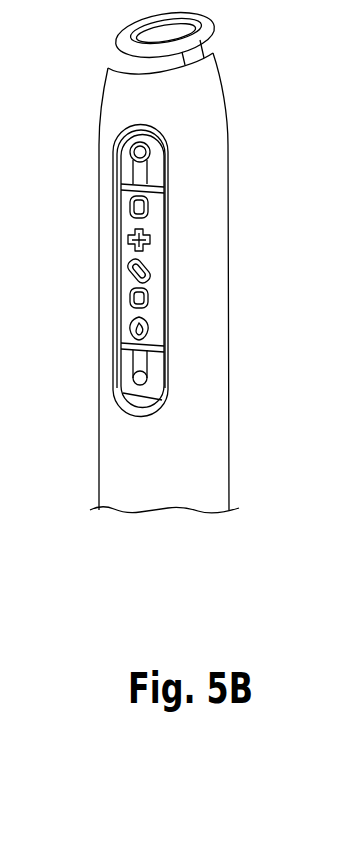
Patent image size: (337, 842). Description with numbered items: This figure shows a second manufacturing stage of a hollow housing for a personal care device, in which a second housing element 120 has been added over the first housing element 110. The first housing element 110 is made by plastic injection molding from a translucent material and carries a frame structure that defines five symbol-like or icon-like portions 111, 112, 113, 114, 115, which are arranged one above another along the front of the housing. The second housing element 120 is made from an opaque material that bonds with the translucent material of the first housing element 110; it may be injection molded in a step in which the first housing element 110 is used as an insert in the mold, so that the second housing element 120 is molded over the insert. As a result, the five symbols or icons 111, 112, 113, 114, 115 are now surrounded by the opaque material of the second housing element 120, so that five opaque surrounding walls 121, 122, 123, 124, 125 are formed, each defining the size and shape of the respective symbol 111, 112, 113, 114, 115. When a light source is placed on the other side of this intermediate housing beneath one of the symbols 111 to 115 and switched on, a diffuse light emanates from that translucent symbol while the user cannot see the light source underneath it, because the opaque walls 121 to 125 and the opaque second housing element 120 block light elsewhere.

The first housing element 110 is at (112, 176).
The symbol-like portion 111 is at (130, 329).
The symbol-like portion 112 is at (130, 299).
The symbol-like portion 113 is at (130, 270).
The symbol-like portion 114 is at (130, 240).
The symbol-like portion 115 is at (131, 207).
The second housing element 120 is at (212, 137).
The opaque surrounding wall 121 is at (148, 329).
The opaque surrounding wall 122 is at (148, 299).
The opaque surrounding wall 123 is at (148, 271).
The opaque surrounding wall 124 is at (150, 240).
The opaque surrounding wall 125 is at (148, 206).